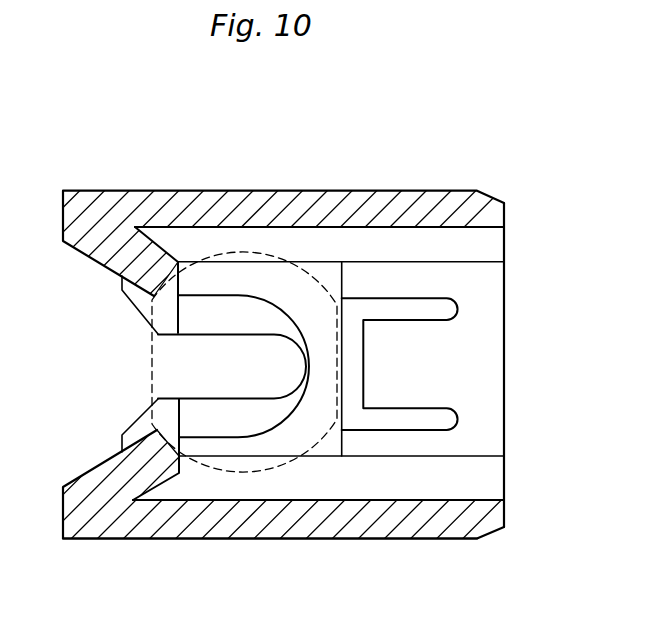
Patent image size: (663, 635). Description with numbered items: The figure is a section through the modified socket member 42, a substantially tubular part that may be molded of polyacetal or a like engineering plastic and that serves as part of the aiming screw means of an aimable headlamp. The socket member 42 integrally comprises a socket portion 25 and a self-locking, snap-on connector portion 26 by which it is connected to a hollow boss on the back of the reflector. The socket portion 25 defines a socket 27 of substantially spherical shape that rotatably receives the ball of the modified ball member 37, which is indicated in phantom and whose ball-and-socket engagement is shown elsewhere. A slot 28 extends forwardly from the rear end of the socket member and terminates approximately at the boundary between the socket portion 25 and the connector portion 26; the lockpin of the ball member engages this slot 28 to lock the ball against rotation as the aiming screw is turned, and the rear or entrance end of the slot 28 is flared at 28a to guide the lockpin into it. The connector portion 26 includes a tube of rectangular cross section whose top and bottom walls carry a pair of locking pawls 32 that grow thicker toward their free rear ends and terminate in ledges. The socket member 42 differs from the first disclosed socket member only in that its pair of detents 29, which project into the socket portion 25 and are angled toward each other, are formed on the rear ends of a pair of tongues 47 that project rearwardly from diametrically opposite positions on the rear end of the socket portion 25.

The socket portion 25 is at (194, 530).
The connector portion 26 is at (463, 527).
The socket 27 is at (247, 311).
The slot 28 is at (222, 388).
The flared entrance end portion of the slot 28a is at (121, 298).
The detents 29 is at (156, 254).
The locking pawls 32 is at (384, 378).
The modified ball member 37 is at (151, 350).
The modified socket member 42 is at (316, 538).
The tongues 47 is at (86, 197).